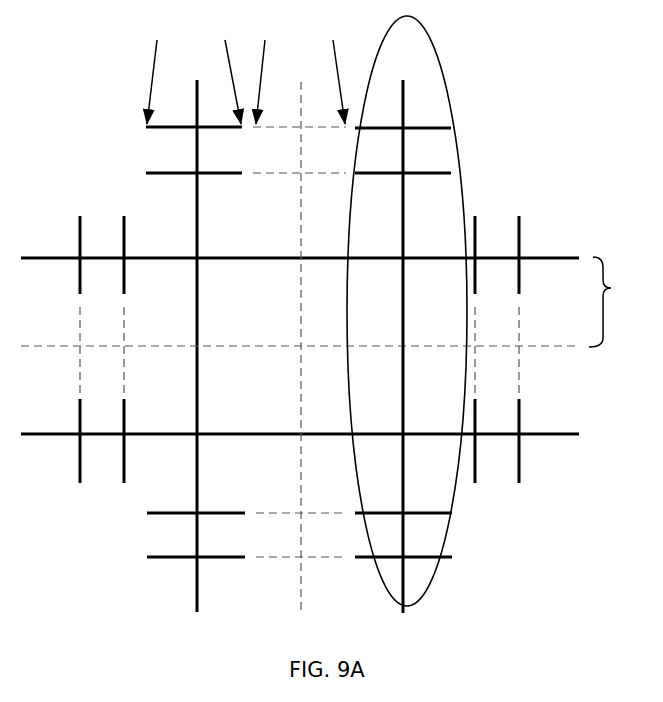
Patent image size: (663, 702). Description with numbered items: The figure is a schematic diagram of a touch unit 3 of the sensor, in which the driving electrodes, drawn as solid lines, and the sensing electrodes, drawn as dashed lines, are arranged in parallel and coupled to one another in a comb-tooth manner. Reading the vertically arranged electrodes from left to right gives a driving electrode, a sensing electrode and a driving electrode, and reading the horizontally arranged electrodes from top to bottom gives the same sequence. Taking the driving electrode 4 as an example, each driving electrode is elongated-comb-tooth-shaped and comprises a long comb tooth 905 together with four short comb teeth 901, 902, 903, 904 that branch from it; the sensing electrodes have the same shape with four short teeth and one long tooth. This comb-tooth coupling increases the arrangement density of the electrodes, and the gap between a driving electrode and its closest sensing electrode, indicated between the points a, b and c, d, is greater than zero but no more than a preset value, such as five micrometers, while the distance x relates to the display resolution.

The touch unit 3 is at (535, 78).
The driving electrode 4 is at (443, 75).
The short comb tooth 901 is at (436, 125).
The short comb tooth 902 is at (425, 173).
The short comb tooth 903 is at (432, 514).
The short comb tooth 904 is at (432, 557).
The long comb tooth 905 is at (407, 218).